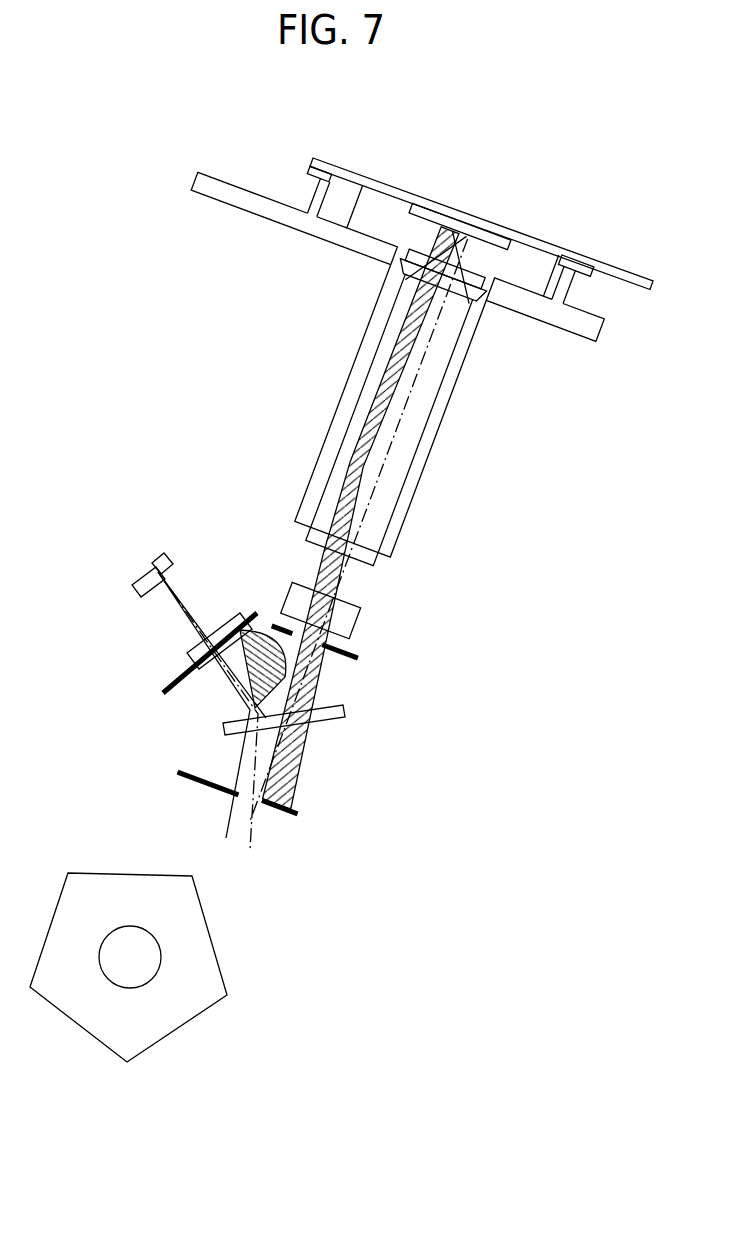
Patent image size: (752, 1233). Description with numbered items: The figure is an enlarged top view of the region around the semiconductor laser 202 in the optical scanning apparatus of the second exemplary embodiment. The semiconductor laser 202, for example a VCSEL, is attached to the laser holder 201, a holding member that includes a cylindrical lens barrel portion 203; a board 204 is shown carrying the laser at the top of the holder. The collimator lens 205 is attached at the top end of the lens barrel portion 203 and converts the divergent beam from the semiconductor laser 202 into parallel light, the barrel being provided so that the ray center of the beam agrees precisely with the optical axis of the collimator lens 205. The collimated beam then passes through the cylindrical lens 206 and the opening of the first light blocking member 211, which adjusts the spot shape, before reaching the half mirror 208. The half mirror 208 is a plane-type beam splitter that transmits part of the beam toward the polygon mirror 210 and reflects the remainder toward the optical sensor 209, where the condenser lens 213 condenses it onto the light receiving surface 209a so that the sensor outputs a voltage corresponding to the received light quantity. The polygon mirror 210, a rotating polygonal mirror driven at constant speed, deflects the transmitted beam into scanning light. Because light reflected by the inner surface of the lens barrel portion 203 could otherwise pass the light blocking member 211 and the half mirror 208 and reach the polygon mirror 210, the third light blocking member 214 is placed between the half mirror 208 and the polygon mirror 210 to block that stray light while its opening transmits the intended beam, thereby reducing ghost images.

The laser holder 201 is at (228, 208).
The semiconductor laser 202 is at (441, 198).
The lens barrel portion 203 is at (347, 382).
The substrate board 204 is at (537, 232).
The collimator lens 205 is at (370, 560).
The cylindrical lens 206 is at (358, 628).
The half mirror 208 is at (333, 716).
The optical sensor 209 is at (128, 582).
The light receiving surface 209a is at (160, 558).
The polygon mirror 210 is at (73, 1027).
The light blocking member 211 is at (357, 660).
The condenser lens 213 is at (188, 648).
The third light blocking member 214 is at (277, 808).